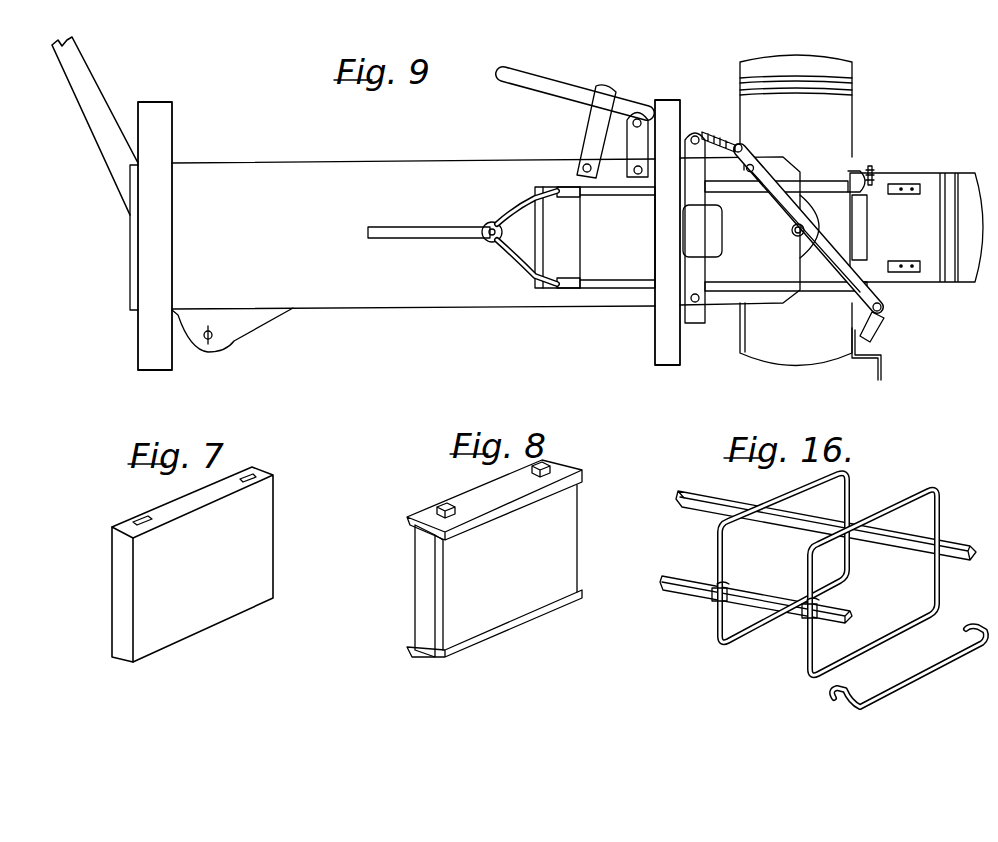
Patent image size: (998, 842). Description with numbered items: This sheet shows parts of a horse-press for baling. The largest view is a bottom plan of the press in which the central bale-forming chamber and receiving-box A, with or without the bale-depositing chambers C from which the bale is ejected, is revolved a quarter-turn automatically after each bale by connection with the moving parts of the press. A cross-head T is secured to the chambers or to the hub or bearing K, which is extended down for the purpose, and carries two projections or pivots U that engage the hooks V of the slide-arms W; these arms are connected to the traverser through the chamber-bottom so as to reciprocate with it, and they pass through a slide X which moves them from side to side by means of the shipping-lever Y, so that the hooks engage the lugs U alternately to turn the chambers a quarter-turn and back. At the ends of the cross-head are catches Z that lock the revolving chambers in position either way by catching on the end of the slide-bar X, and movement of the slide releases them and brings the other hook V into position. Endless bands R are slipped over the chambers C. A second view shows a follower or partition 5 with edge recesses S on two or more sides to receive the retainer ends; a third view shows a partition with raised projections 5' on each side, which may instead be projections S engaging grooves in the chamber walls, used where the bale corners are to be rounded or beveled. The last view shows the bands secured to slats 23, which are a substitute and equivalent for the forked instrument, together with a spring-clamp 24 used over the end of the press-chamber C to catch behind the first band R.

In FIG. 9, the bands R is at (852, 92).
In FIG. 16, the bands R is at (722, 551).
In FIG. 9, the catches Z is at (889, 330).
In FIG. 9, the projections or pivots U is at (900, 303).
In FIG. 9, the bale-forming chamber and receiving-box A is at (820, 226).
In FIG. 9, the slide-arms W is at (746, 190).
In FIG. 9, the hub or bearing K is at (793, 236).
In FIG. 9, the cross-head T is at (802, 228).
In FIG. 9, the bale-depositing chamber C is at (886, 228).
In FIG. 9, the hooks V is at (860, 185).
In FIG. 9, the slide X is at (702, 242).
In FIG. 9, the shipping-lever Y is at (575, 93).
In FIG. 7, the slot 5 is at (154, 512).
In FIG. 7, the edge recesses S is at (240, 480).
In FIG. 8, the lug 5' is at (518, 480).
In FIG. 16, the slats 23 is at (905, 547).
In FIG. 16, the spring-clamp 24 is at (909, 666).